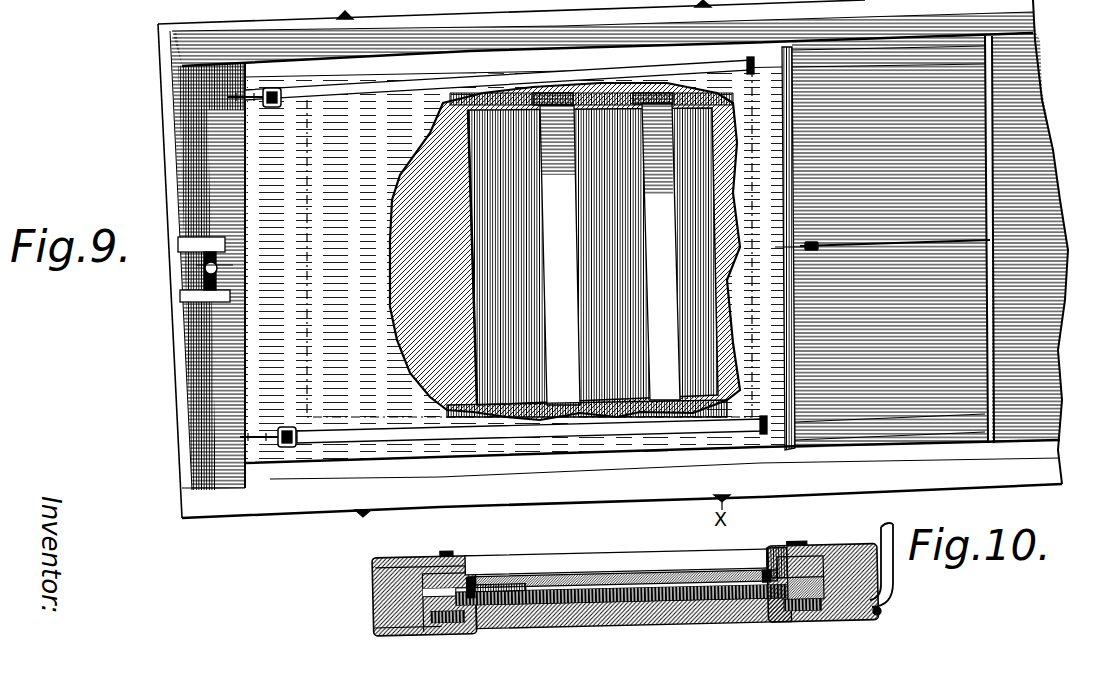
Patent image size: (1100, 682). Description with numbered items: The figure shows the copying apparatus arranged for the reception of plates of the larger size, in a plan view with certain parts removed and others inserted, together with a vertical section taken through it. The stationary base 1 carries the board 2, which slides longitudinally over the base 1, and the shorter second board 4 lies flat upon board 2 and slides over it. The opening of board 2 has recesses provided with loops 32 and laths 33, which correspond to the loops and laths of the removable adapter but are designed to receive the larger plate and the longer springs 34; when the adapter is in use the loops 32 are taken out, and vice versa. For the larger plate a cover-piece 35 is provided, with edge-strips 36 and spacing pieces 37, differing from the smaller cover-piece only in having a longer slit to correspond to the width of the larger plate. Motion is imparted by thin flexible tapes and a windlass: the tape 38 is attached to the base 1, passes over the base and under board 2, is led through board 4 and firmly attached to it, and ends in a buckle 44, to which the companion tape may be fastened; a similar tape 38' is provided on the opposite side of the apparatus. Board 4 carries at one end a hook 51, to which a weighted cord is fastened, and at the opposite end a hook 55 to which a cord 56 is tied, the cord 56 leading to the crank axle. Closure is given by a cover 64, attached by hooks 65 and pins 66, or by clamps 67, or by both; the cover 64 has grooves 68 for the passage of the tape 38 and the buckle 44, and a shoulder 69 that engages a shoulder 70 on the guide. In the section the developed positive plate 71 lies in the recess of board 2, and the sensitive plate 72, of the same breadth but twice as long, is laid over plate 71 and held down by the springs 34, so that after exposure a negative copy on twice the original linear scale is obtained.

In FIG. 9, the base 1 is at (1052, 343).
In FIG. 9, the board 2 is at (890, 242).
In FIG. 9, the second board 4 is at (515, 265).
In FIG. 9, the loops 32 is at (667, 402).
In FIG. 10, the loops 32 is at (493, 606).
In FIG. 10, the laths 33 is at (772, 562).
In FIG. 9, the springs 34 is at (606, 249).
In FIG. 10, the springs 34 is at (502, 593).
In FIG. 10, the cover-piece 35 is at (778, 560).
In FIG. 10, the edge-strips 36 is at (667, 578).
In FIG. 10, the spacing pieces 37 is at (487, 579).
In FIG. 9, the tape 38 is at (643, 463).
In FIG. 9, the tape 38' is at (491, 92).
In FIG. 9, the buckle 44 is at (287, 448).
In FIG. 9, the hook 51 is at (222, 267).
In FIG. 9, the hook 55 is at (803, 246).
In FIG. 9, the cord 56 is at (946, 240).
In FIG. 10, the cover 64 is at (757, 618).
In FIG. 10, the hooks 65 is at (372, 609).
In FIG. 10, the pins 66 is at (373, 631).
In FIG. 10, the clamps 67 is at (833, 556).
In FIG. 10, the grooves 68 is at (453, 623).
In FIG. 10, the shoulder 69 is at (893, 594).
In FIG. 10, the shoulder 70 is at (883, 612).
In FIG. 10, the plate 71 is at (583, 582).
In FIG. 10, the sensitive plate 72 is at (650, 599).